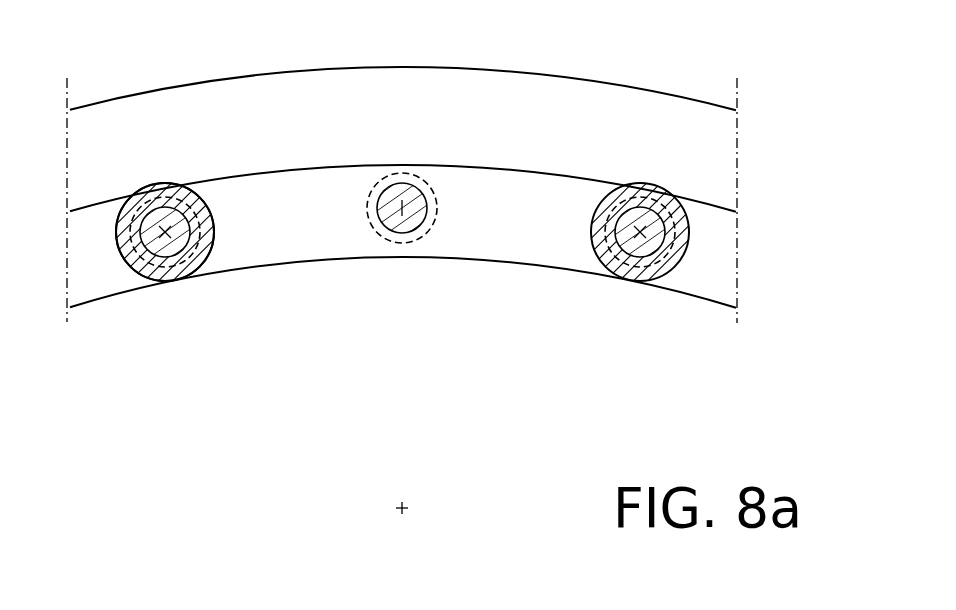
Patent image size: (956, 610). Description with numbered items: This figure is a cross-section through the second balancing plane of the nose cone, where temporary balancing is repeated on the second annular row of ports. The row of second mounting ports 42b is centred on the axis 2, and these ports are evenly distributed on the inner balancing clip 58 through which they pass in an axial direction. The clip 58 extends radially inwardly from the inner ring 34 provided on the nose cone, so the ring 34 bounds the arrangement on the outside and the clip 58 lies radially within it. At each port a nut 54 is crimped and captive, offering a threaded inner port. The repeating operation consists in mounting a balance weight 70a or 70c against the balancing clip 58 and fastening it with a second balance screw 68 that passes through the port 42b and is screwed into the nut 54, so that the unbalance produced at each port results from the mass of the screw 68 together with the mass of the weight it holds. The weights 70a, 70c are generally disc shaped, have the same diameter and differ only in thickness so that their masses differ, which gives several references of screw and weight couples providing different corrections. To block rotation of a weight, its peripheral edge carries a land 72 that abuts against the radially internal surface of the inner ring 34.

The axis 2 is at (406, 503).
The inner ring 34 is at (517, 92).
The second mounting port 42b is at (420, 193).
The nut 54 is at (188, 183).
The inner balancing clip 58 is at (287, 227).
The second balance screw 68 is at (643, 187).
The balance weight 70a is at (197, 273).
The balance weight 70c is at (632, 275).
The land 72 is at (152, 188).